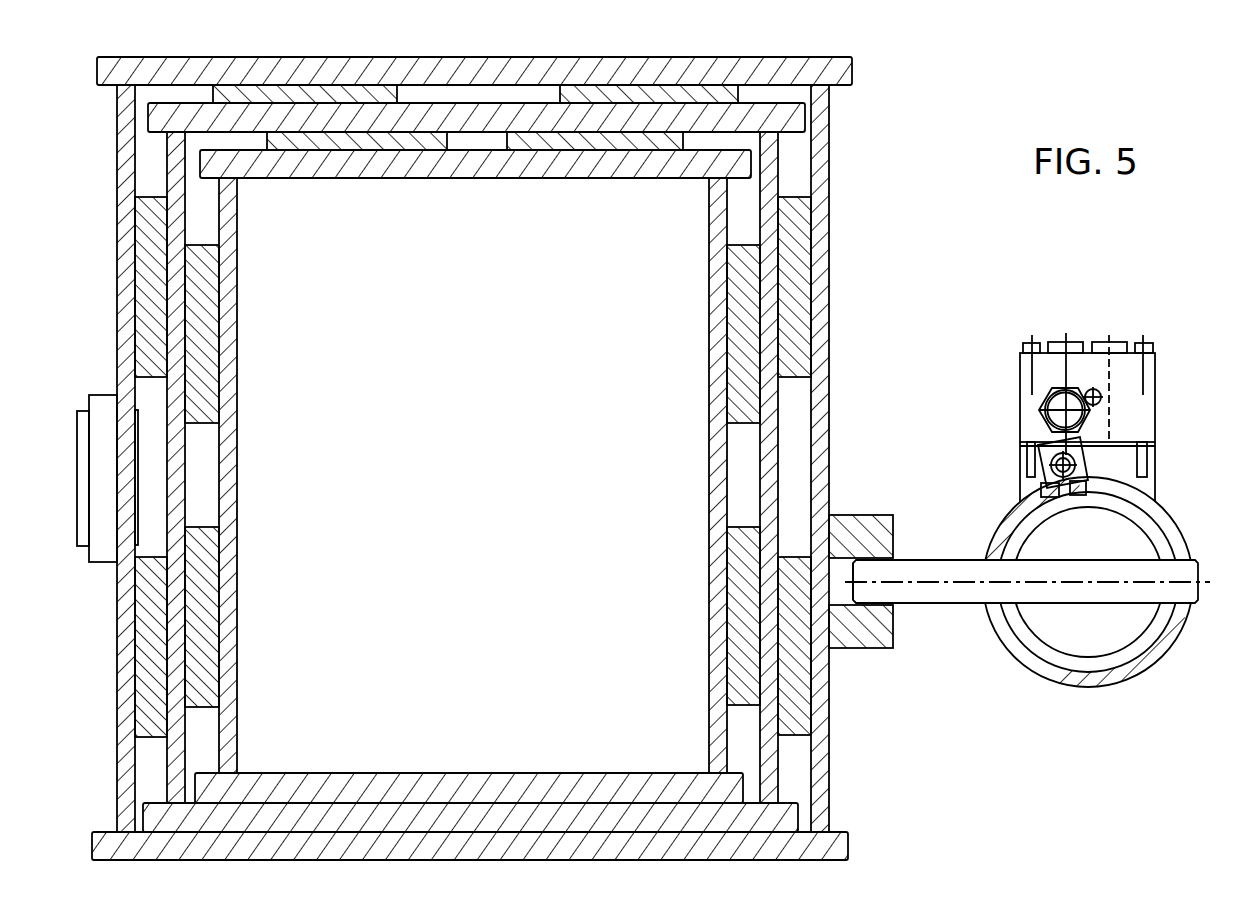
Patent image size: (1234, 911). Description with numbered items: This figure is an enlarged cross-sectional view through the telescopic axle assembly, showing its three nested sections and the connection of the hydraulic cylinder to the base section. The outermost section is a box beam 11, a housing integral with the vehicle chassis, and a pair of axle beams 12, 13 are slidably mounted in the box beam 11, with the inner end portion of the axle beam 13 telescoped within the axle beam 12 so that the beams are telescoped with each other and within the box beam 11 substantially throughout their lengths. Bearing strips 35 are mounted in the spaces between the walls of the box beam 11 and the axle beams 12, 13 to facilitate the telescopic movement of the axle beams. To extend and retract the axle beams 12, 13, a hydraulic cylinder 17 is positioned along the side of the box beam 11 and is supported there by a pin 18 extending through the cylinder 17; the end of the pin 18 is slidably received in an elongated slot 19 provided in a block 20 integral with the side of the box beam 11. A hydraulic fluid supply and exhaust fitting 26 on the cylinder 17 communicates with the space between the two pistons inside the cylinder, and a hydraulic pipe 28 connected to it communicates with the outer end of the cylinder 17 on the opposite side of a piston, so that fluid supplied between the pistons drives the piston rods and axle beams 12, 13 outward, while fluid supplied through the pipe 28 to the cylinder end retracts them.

The box beam 11 is at (823, 248).
The axle beam 12 is at (772, 157).
The axle beam 13 is at (720, 220).
The bearing strips 35 is at (335, 88).
The block 20 is at (848, 515).
The elongated slot 19 is at (842, 594).
The pin 18 is at (1047, 558).
The hydraulic cylinder 17 is at (1163, 510).
The hydraulic fluid supply and exhaust fitting 26 is at (1148, 400).
The hydraulic pipe 28 is at (1030, 472).